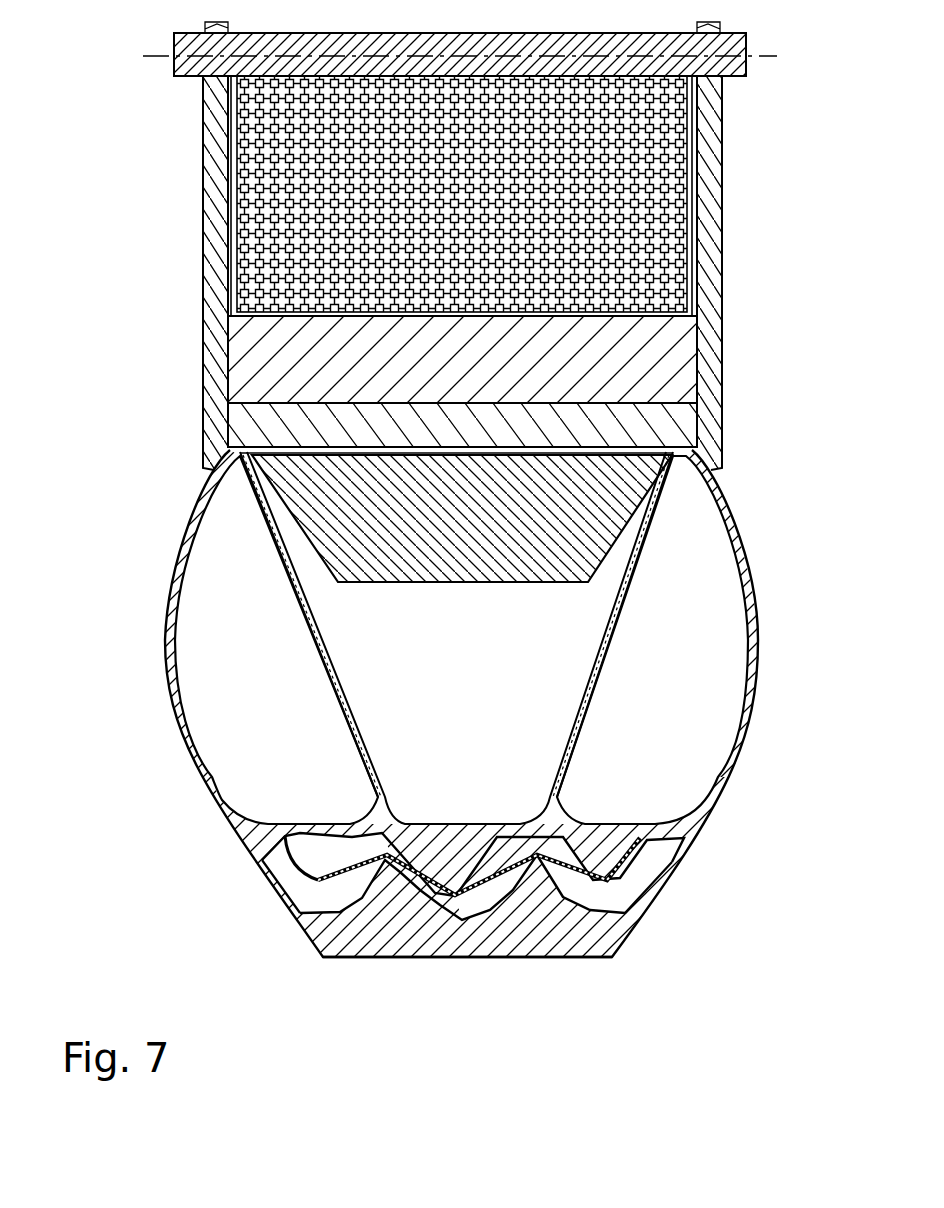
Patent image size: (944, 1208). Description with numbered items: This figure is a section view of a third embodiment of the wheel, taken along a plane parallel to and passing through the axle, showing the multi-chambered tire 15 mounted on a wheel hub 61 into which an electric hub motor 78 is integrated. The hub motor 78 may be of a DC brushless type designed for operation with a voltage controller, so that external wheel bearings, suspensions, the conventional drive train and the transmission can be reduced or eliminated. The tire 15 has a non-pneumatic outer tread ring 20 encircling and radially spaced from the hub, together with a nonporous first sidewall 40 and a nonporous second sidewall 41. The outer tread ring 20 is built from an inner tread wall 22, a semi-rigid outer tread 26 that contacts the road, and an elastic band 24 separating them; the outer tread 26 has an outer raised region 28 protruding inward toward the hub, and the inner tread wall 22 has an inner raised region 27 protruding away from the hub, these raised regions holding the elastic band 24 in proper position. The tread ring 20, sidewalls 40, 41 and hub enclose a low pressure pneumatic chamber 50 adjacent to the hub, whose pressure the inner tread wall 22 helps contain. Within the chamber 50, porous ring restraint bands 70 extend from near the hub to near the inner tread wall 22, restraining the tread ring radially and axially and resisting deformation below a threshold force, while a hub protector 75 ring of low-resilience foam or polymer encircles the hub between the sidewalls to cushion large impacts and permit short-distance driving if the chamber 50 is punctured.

The multi-chambered tire 15 is at (139, 823).
The outer tread ring 20 is at (718, 905).
The inner tread wall 22 is at (397, 917).
The elastic band 24 is at (582, 880).
The semi-rigid outer tread 26 is at (430, 933).
The inner raised region 27 is at (322, 867).
The outer raised region 28 is at (387, 867).
The first sidewall 40 is at (187, 750).
The second sidewall 41 is at (748, 728).
The low pressure pneumatic chamber 50 is at (388, 650).
The wheel hub 61 is at (706, 236).
The porous ring restraint band 70 is at (353, 723).
The hub protector 75 is at (461, 537).
The electric hub motor 78 is at (357, 170).